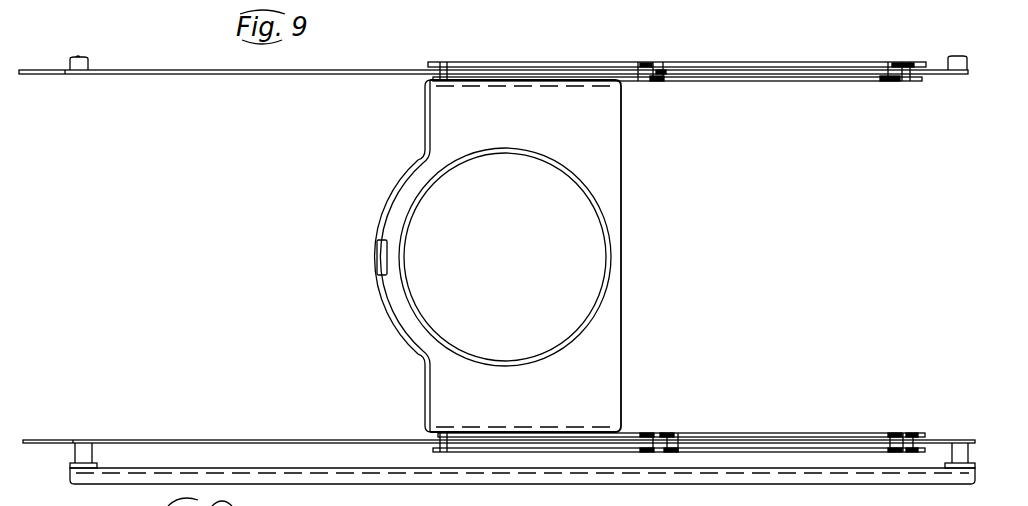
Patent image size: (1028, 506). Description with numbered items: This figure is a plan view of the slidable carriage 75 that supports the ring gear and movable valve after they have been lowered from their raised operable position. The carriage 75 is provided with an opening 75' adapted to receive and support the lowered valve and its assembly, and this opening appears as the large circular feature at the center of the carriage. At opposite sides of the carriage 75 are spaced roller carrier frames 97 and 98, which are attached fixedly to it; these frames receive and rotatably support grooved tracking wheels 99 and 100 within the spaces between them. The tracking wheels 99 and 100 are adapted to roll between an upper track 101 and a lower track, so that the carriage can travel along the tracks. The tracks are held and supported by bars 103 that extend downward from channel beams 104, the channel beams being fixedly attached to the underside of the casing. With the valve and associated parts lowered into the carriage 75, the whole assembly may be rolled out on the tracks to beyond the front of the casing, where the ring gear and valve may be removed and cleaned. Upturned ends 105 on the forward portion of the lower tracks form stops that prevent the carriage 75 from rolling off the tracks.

The slidable carriage 75 is at (516, 256).
The opening 75' is at (530, 257).
The roller carrier frame 97 is at (776, 433).
The roller carrier frame 98 is at (755, 62).
The grooved tracking wheel 99 is at (680, 82).
The grooved tracking wheel 100 is at (888, 78).
The upper track 101 is at (223, 75).
The bar 103 is at (70, 461).
The channel beam 104 is at (118, 478).
The upturned end 105 is at (44, 76).